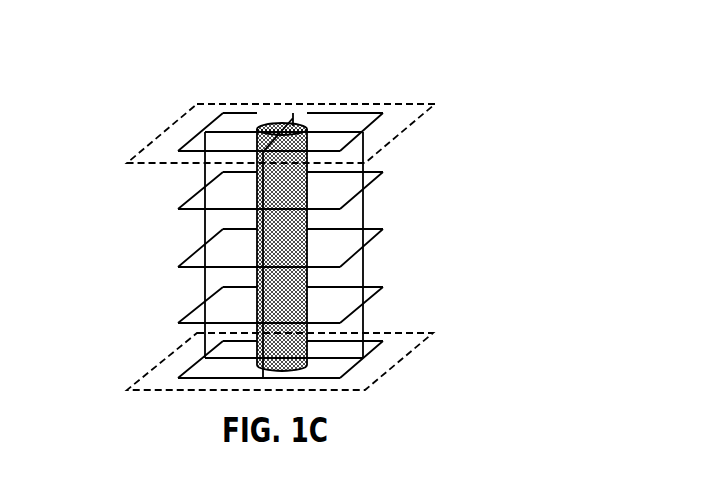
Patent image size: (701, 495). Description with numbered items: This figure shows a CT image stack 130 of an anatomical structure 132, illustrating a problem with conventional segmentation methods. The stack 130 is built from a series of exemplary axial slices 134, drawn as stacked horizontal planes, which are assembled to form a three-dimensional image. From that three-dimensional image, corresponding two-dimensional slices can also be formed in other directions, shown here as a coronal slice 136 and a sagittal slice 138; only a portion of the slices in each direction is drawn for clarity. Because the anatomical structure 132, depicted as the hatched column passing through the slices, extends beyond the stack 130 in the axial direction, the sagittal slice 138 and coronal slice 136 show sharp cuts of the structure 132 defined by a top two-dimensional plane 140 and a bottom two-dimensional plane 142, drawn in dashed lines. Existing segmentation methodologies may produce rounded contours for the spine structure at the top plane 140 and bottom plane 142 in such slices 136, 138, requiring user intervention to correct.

The CT image stack 130 is at (537, 100).
The anatomical structure 132 is at (255, 242).
The axial slices 134 is at (373, 183).
The coronal slices 136 is at (330, 130).
The sagittal slices 138 is at (293, 118).
The top 2-D plane 140 is at (165, 132).
The bottom 2-D plane 142 is at (163, 360).